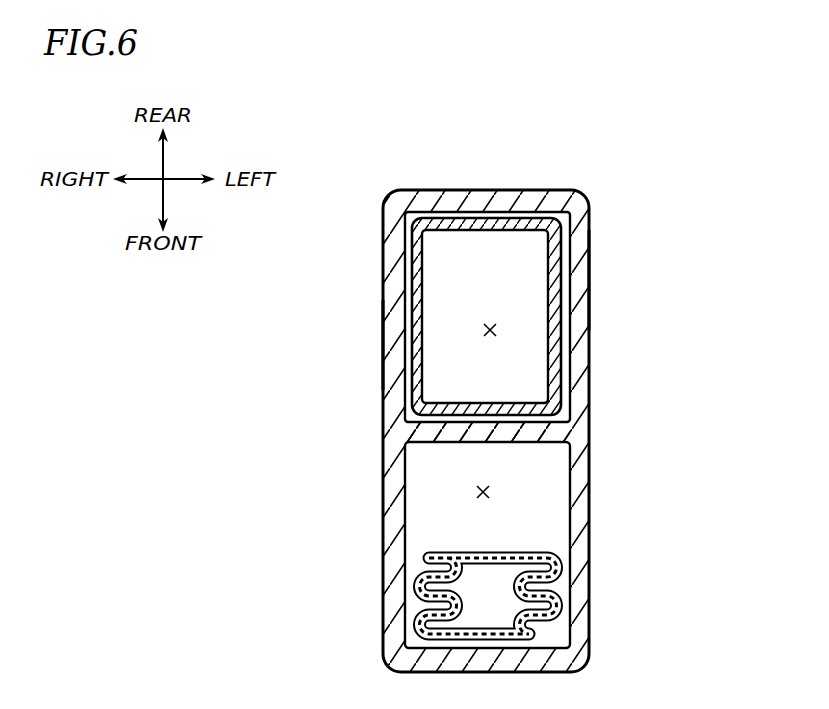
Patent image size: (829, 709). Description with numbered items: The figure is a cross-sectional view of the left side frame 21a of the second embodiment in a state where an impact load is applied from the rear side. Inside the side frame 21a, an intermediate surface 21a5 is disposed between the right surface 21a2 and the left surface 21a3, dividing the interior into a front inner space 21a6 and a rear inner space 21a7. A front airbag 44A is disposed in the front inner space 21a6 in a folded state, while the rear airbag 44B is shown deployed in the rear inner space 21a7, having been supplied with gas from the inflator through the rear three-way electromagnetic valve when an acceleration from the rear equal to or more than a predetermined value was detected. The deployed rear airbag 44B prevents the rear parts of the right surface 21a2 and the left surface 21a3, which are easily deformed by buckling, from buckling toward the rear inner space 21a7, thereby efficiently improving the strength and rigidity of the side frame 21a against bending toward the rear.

The side frame 21a is at (589, 249).
The right surface 21a2 is at (383, 341).
The left surface 21a3 is at (589, 279).
The intermediate surface 21a5 is at (493, 442).
The front inner space 21a6 is at (489, 492).
The rear inner space 21a7 is at (493, 331).
The front airbag 44A is at (421, 590).
The rear airbag 44B is at (407, 270).